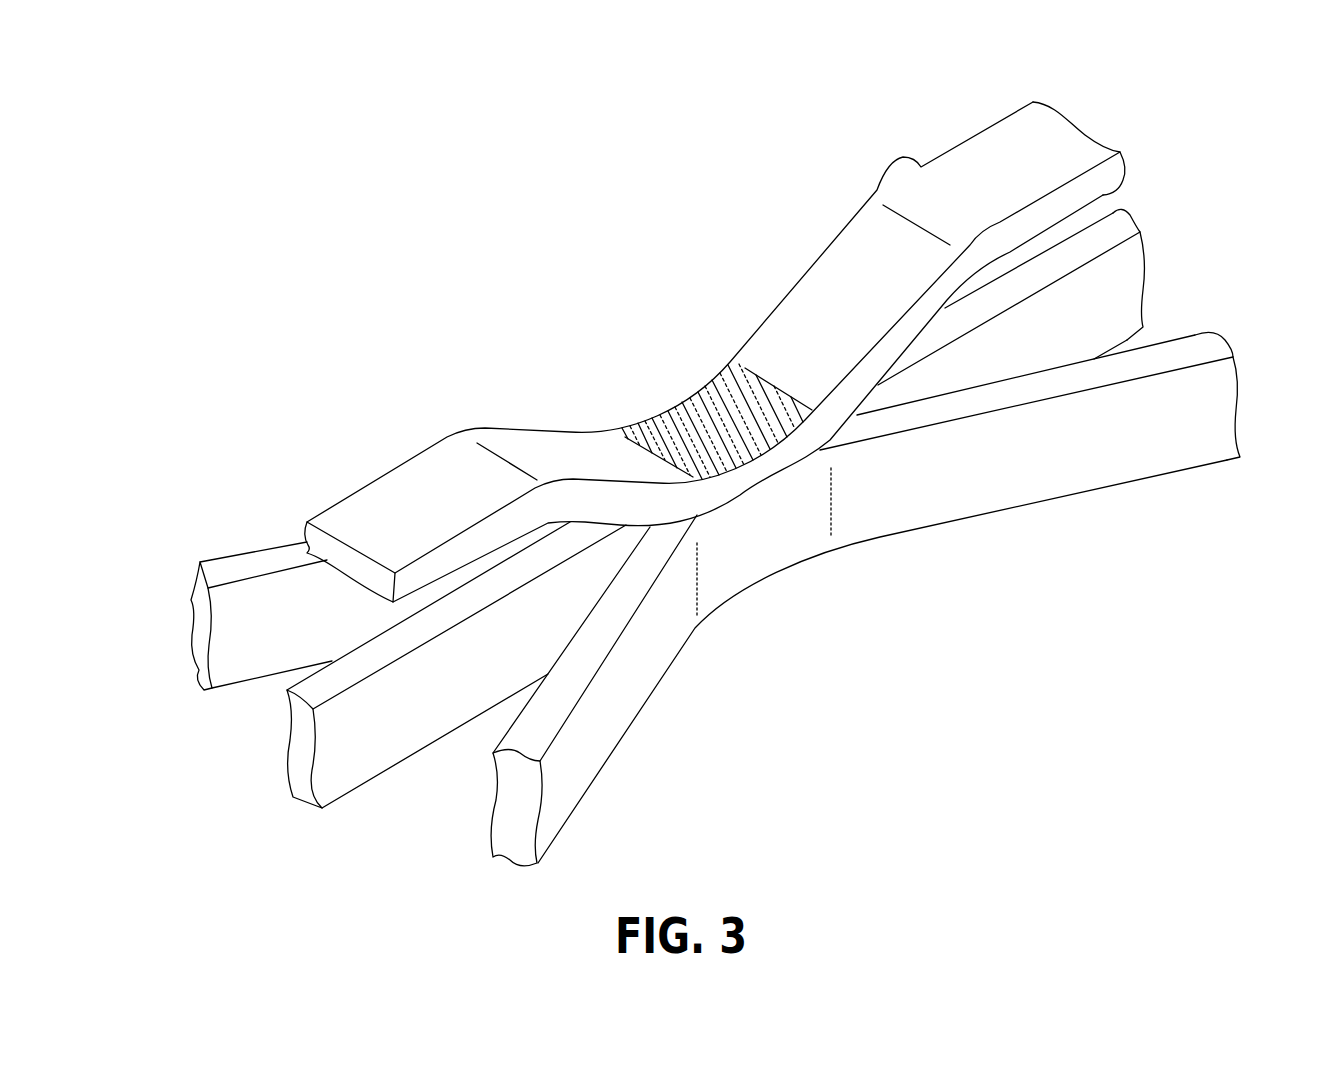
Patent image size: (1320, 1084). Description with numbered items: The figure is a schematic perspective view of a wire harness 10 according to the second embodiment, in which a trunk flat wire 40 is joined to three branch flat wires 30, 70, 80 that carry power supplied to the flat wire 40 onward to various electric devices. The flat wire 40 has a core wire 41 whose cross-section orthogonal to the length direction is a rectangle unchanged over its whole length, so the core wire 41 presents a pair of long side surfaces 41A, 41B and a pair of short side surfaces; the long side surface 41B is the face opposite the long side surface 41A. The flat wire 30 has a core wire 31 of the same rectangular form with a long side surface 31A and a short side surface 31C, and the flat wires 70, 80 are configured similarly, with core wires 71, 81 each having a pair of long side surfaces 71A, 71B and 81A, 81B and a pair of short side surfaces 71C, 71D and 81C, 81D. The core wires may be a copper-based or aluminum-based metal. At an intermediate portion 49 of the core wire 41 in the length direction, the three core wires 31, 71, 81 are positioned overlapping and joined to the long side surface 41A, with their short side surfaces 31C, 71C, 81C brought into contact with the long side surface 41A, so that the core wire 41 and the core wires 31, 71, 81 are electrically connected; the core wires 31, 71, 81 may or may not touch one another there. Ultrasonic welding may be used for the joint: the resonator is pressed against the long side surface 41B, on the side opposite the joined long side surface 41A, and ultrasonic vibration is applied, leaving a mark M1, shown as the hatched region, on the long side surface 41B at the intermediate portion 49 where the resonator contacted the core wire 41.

The wire harness 10 is at (702, 456).
The flat wire 30 is at (228, 593).
The core wire 31 is at (228, 593).
The long side surface 31A is at (218, 630).
The short side surface 31C is at (275, 552).
The flat wire 40 is at (752, 324).
The core wire 41 is at (752, 352).
The long side surface 41A is at (1115, 195).
The long side surface 41B is at (808, 298).
The intermediate portion 49 is at (755, 470).
The flat wire 70 is at (763, 538).
The core wire 71 is at (704, 538).
The long side surface 71A is at (412, 728).
The long side surface 71B is at (298, 688).
The short side surface 71C is at (368, 658).
The short side surface 71D is at (345, 795).
The flat wire 80 is at (885, 574).
The core wire 81 is at (865, 598).
The long side surface 81A is at (627, 705).
The long side surface 81B is at (526, 698).
The short side surface 81C is at (578, 648).
The short side surface 81D is at (598, 775).
The mark M1 is at (681, 407).